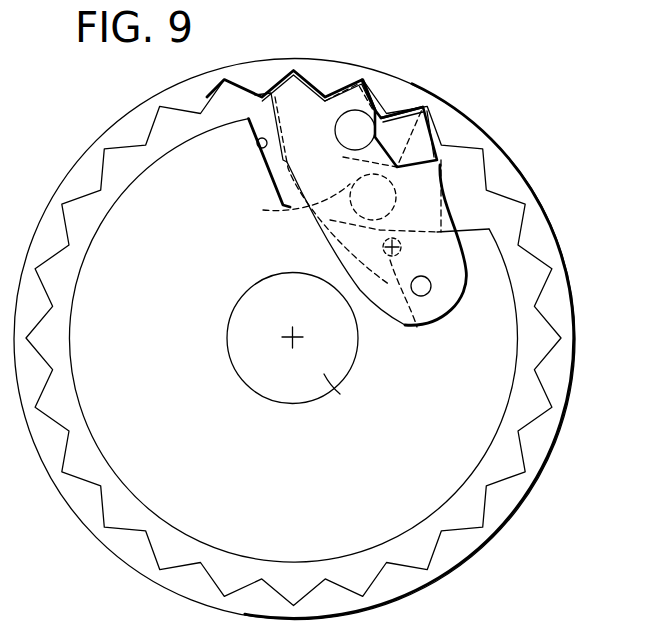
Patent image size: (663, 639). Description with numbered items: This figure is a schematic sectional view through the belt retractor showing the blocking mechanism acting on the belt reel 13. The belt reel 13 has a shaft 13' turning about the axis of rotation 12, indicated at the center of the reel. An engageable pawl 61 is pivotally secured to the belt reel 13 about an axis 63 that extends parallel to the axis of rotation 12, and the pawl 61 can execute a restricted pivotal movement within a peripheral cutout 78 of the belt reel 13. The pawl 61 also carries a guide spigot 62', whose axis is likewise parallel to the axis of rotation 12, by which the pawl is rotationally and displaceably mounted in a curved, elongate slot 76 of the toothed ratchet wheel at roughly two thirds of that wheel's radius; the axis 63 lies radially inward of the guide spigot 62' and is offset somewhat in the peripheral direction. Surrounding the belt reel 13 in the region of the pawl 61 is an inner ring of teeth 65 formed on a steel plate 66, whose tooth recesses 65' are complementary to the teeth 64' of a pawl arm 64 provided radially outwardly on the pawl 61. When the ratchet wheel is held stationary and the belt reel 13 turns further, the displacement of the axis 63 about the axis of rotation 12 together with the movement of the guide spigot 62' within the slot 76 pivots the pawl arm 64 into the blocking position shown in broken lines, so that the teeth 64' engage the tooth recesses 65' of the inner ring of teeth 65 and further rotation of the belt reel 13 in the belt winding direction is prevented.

The axis of rotation 12 is at (292, 340).
The belt reel 13 is at (293, 340).
The shaft 13' is at (350, 401).
The engageable pawl 61 is at (312, 243).
The guide spigot 62' is at (327, 212).
The axis 63 is at (421, 296).
The pawl arm 64 is at (440, 202).
The teeth of the pawl arm 64' is at (443, 100).
The inner ring of teeth 65 is at (294, 339).
The tooth recesses 65' is at (332, 314).
The steel plate 66 is at (279, 66).
The curved elongate slot 76 is at (428, 100).
The peripheral cutout 78 is at (258, 148).